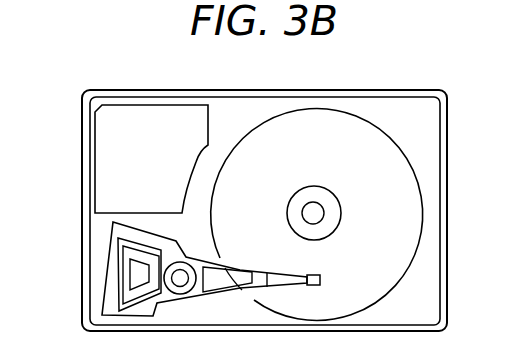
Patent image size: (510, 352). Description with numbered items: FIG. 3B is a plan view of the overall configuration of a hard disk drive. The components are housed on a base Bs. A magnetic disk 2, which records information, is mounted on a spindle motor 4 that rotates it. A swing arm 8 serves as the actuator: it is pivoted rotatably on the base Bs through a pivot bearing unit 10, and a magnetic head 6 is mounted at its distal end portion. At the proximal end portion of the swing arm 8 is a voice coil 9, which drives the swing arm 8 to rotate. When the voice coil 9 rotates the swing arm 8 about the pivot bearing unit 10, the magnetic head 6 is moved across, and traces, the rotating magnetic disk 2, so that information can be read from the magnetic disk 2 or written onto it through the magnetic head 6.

The base Bs is at (186, 90).
The magnetic disk 2 is at (312, 109).
The spindle motor 4 is at (315, 187).
The magnetic head 6 is at (320, 275).
The swing arm 8 is at (239, 266).
The voice coil 9 is at (120, 268).
The pivot bearing unit 10 is at (181, 261).